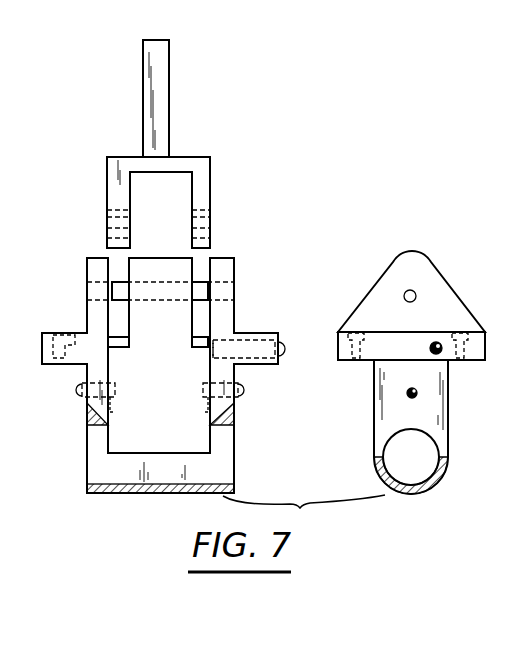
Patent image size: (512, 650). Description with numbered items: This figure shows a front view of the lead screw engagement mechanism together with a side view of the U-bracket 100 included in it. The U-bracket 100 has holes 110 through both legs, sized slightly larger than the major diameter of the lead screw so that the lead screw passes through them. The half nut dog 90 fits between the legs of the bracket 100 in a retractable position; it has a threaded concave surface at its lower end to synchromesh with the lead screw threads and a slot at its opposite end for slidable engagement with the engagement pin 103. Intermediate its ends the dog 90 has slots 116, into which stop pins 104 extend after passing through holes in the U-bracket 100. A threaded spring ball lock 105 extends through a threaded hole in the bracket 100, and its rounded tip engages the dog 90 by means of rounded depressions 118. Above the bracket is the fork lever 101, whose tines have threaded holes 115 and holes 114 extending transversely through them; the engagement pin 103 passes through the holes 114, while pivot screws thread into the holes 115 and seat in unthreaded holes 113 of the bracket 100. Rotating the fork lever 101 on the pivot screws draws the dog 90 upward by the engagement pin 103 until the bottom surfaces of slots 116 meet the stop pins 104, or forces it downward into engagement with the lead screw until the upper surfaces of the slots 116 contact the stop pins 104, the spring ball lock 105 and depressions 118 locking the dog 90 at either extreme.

The half nut dog 90 is at (174, 339).
The U-bracket 100 is at (258, 298).
The fork lever 101 is at (258, 128).
The engagement pin 103 is at (117, 280).
The stop pins 104 is at (430, 385).
The spring ball lock 105 is at (273, 341).
The holes 110 is at (93, 450).
The unthreaded holes 113 is at (87, 292).
The holes 114 is at (107, 238).
The threaded holes 115 is at (110, 212).
The slots 116 is at (200, 401).
The rounded depressions 118 is at (212, 348).